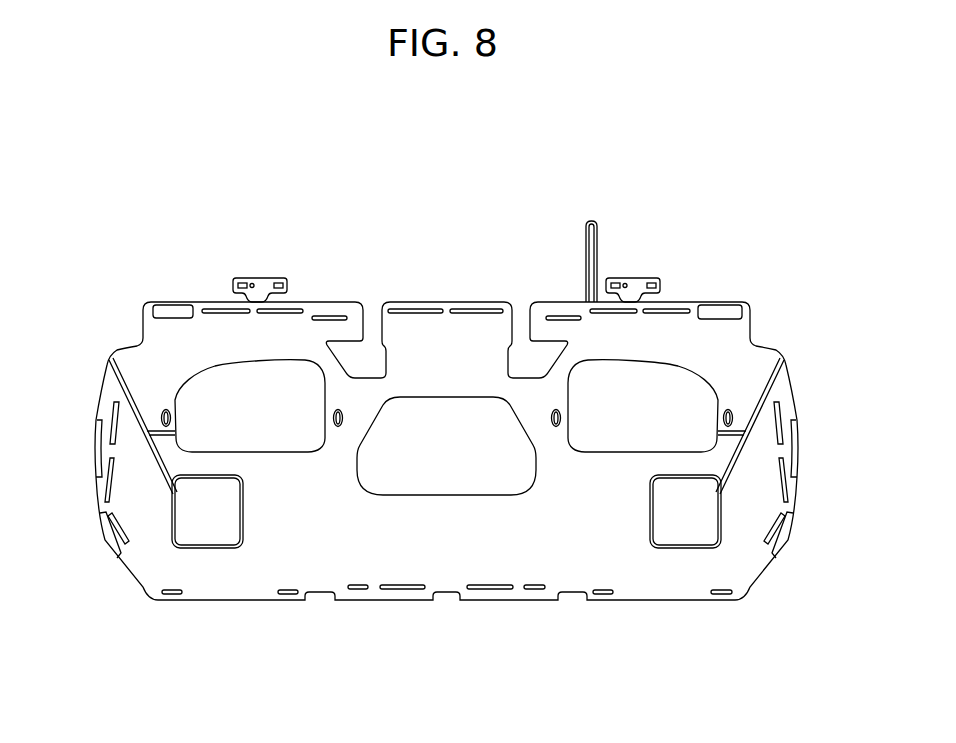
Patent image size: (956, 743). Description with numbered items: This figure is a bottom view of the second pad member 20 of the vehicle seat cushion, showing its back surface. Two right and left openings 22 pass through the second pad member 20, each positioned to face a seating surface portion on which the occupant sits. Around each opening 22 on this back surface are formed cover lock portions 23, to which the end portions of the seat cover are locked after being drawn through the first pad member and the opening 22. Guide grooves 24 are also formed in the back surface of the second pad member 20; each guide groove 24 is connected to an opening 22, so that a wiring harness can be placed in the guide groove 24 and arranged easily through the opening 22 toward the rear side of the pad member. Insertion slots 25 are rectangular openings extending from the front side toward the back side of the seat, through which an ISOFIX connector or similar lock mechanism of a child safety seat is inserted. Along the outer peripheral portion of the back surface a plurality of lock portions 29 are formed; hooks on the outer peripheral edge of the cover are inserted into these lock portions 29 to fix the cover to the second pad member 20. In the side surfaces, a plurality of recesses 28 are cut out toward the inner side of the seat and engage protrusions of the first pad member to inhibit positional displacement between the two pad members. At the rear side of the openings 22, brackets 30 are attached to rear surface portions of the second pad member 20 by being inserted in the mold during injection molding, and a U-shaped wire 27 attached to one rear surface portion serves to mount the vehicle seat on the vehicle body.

The second pad member 20 is at (726, 170).
The opening 22 is at (677, 383).
The cover lock portion 23 is at (740, 403).
The guide groove 24 is at (208, 548).
The insertion slot 25 is at (172, 317).
The wire 27 is at (590, 221).
The recess 28 is at (95, 452).
The lock portion 29 is at (415, 312).
The bracket 30 is at (640, 252).